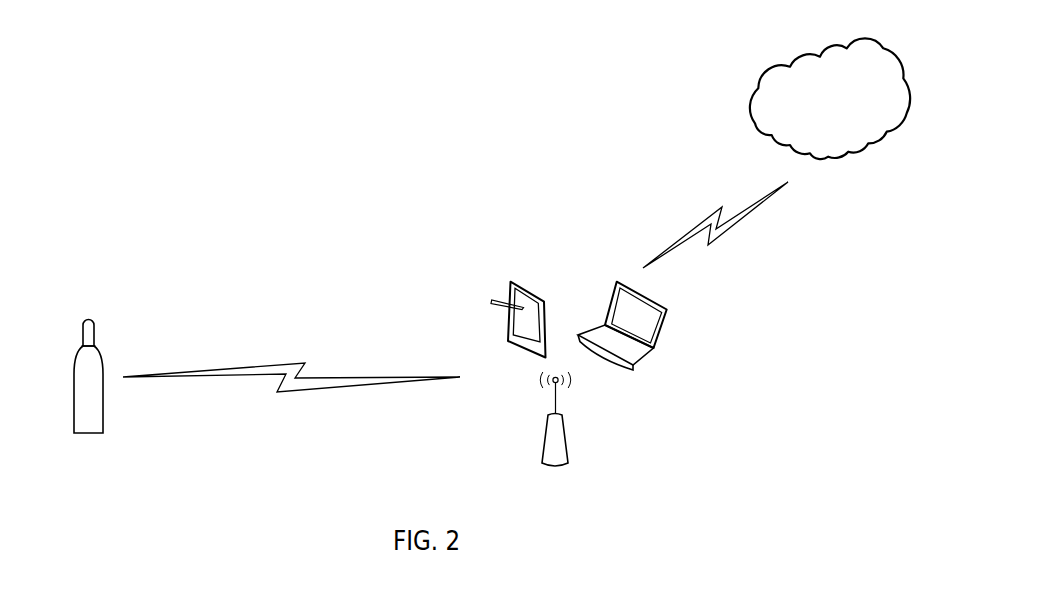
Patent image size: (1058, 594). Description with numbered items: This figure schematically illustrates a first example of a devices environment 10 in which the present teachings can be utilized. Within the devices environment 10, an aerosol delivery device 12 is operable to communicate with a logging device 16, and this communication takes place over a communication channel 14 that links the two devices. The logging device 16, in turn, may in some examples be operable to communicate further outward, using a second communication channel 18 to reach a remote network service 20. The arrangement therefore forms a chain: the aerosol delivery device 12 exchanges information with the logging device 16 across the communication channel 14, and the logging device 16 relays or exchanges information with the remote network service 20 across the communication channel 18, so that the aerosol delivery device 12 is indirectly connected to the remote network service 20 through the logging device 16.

The devices environment 10 is at (249, 44).
The aerosol delivery device 12 is at (94, 296).
The communication channel 14 is at (309, 331).
The logging device 16 is at (522, 258).
The communication channel 18 is at (704, 208).
The remote network service 20 is at (776, 56).